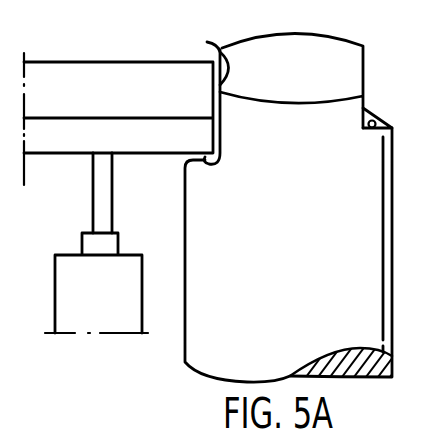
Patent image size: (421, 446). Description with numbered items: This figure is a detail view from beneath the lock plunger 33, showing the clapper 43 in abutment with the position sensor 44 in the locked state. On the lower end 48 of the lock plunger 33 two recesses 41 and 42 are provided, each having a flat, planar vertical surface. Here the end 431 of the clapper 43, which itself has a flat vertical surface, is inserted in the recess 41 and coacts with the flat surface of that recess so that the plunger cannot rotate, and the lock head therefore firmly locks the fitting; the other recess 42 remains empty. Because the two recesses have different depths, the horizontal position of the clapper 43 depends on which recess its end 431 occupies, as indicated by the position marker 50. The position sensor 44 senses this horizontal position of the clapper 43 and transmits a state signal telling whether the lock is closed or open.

The lock plunger 33 is at (285, 263).
The recess 41 is at (218, 162).
The recess 42 is at (366, 127).
The clapper 43 is at (115, 96).
The end of the clapper 431 is at (198, 52).
The position sensor 44 is at (115, 310).
The lower end of the lock plunger 48 is at (302, 76).
The position marker 50 is at (106, 227).